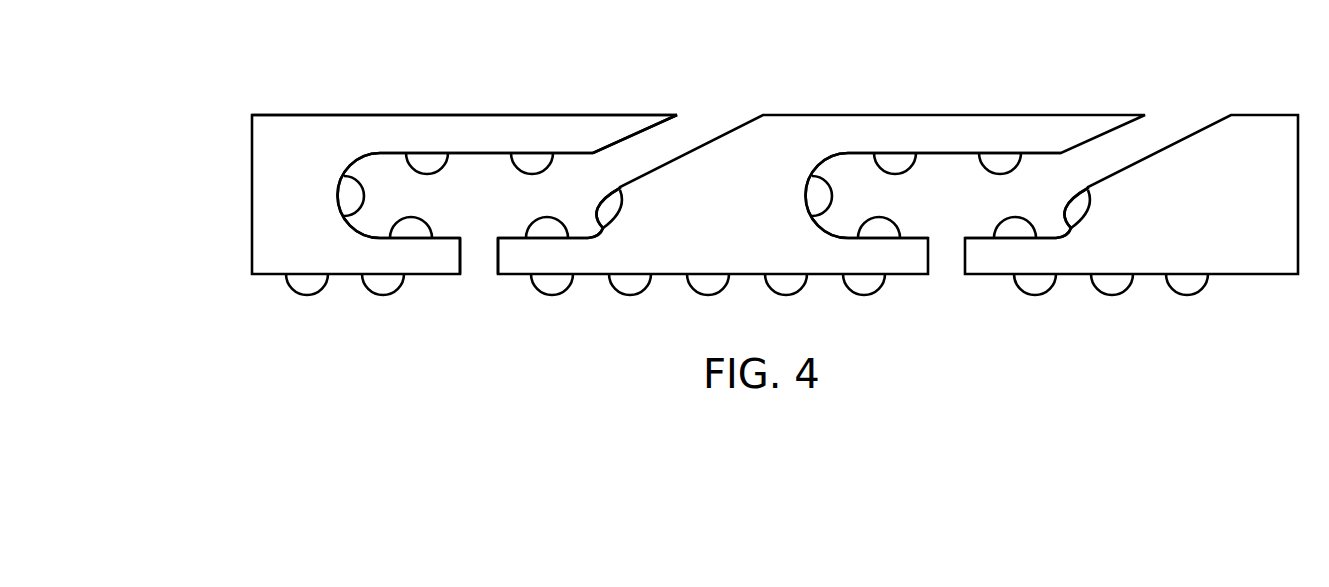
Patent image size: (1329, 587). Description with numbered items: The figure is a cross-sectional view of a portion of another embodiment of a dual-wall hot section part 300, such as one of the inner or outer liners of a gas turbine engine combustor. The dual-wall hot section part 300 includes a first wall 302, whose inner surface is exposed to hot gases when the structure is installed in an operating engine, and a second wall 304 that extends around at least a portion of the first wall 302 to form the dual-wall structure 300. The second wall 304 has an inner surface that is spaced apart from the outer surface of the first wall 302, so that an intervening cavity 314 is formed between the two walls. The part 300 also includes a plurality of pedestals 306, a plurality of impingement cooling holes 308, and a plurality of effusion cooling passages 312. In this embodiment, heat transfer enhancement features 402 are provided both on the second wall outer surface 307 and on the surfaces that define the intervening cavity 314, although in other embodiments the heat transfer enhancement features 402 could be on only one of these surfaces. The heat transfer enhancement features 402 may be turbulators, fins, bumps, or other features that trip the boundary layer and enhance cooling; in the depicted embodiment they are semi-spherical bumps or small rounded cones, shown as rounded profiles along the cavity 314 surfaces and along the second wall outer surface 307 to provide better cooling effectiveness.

The dual-wall hot section part 300 is at (188, 102).
The first wall 302 is at (453, 121).
The second wall 304 is at (436, 268).
The pedestals 306 is at (735, 200).
The second wall outer surface 307 is at (1250, 274).
The impingement cooling holes 308 is at (478, 268).
The effusion cooling passages 312 is at (702, 122).
The intervening cavity 314 is at (500, 209).
The heat transfer enhancement features 402 is at (365, 196).